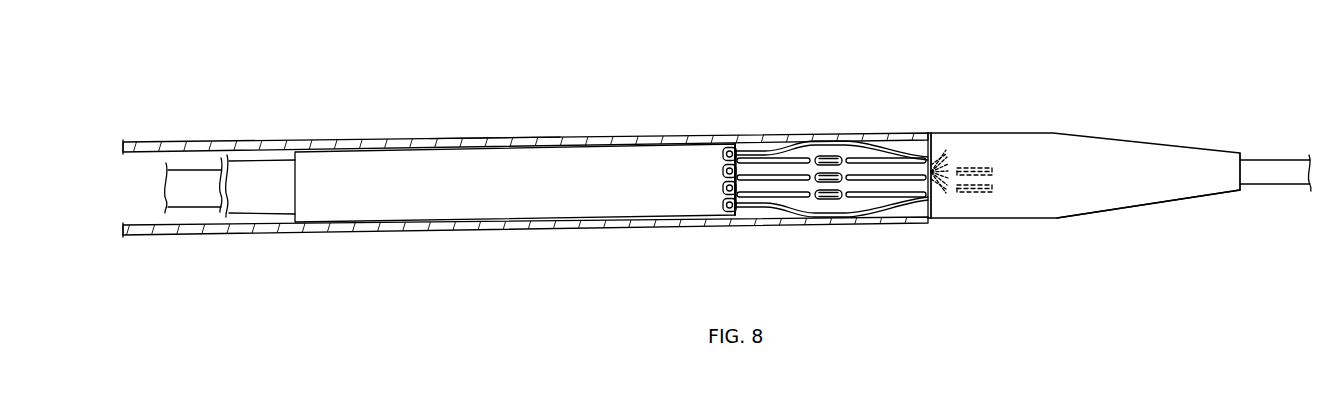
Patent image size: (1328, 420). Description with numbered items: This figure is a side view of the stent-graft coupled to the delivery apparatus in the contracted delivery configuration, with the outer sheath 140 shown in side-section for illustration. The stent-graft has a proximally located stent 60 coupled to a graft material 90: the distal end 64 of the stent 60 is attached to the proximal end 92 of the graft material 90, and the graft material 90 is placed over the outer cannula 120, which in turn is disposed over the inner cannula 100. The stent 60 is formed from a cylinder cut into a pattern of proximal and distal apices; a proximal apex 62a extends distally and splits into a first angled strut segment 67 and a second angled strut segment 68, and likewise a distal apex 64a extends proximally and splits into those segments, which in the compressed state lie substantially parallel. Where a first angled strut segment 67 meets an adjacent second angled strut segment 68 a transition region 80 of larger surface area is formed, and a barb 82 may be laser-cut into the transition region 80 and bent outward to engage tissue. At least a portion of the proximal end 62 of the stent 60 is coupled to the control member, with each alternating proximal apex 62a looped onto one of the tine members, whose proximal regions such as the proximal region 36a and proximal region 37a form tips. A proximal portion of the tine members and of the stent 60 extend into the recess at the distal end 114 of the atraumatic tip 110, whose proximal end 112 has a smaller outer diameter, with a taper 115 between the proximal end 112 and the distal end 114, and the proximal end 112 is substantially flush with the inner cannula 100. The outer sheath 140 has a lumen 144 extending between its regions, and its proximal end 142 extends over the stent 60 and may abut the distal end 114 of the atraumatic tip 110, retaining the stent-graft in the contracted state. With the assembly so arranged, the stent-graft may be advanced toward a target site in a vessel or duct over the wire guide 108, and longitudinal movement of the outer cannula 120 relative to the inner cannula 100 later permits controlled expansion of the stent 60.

The inner cannula 100 is at (193, 166).
The outer cannula 120 is at (270, 158).
The outer sheath 140 is at (383, 128).
The lumen 144 is at (467, 140).
The proximal end 142 is at (925, 131).
The distal end 114 is at (935, 131).
The graft material 90 is at (563, 170).
The proximal end 92 is at (728, 140).
The distal apex 64a is at (722, 157).
The distal end 64 is at (745, 222).
The stent 60 is at (831, 198).
The second angled strut segment 68 is at (755, 158).
The first angled strut segment 67 is at (783, 156).
The barb 82 is at (860, 155).
The transition region 80 is at (822, 155).
The proximal end 62 is at (937, 219).
The proximal apex 62a is at (952, 150).
The proximal region 36a is at (978, 156).
The proximal region 37a is at (983, 193).
The atraumatic tip 110 is at (1147, 132).
The taper 115 is at (1147, 206).
The proximal end 112 is at (1233, 193).
The wire guide 108 is at (1290, 176).